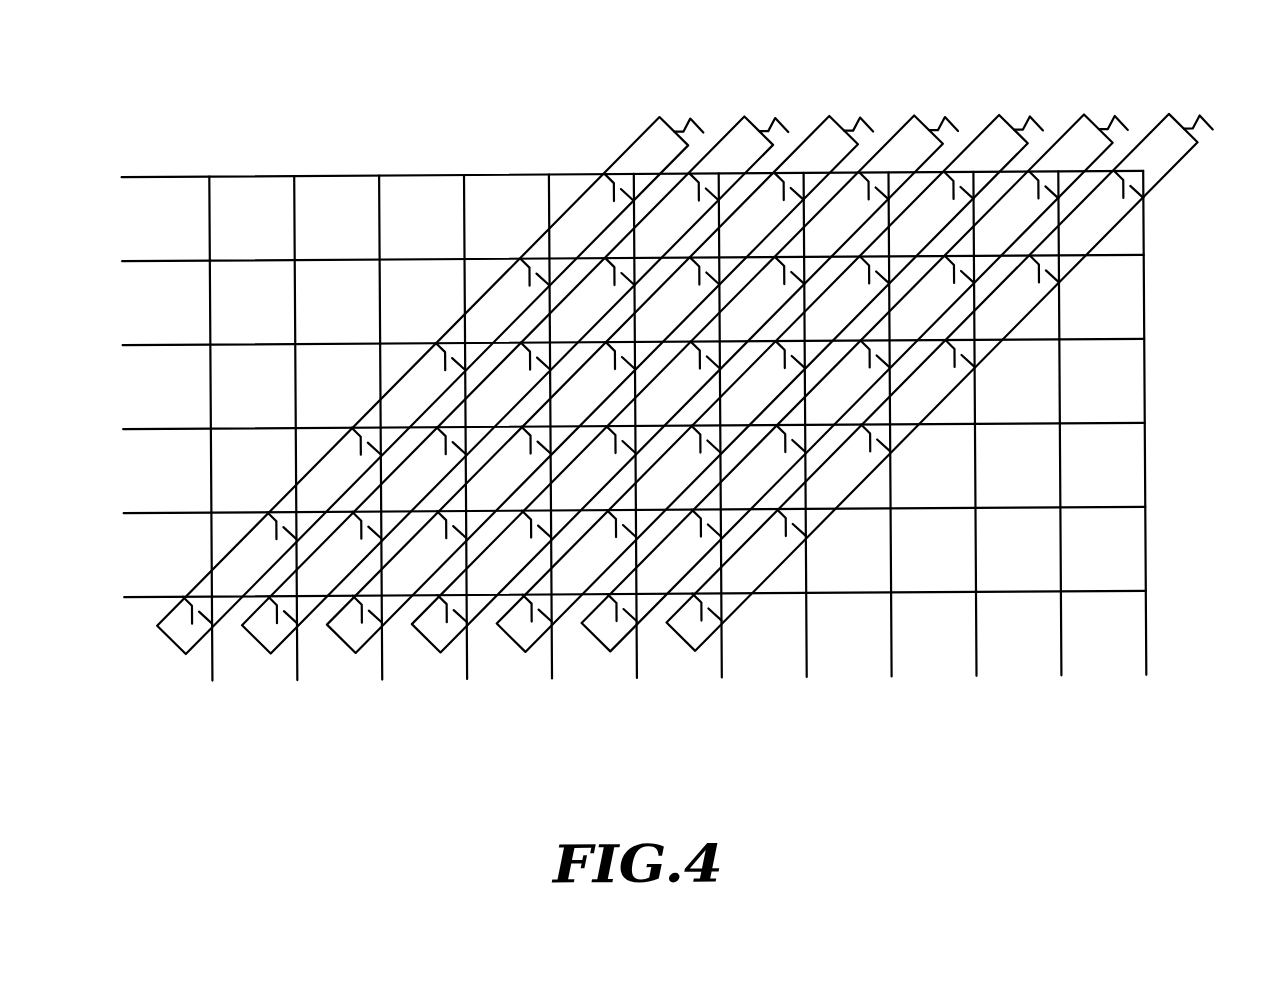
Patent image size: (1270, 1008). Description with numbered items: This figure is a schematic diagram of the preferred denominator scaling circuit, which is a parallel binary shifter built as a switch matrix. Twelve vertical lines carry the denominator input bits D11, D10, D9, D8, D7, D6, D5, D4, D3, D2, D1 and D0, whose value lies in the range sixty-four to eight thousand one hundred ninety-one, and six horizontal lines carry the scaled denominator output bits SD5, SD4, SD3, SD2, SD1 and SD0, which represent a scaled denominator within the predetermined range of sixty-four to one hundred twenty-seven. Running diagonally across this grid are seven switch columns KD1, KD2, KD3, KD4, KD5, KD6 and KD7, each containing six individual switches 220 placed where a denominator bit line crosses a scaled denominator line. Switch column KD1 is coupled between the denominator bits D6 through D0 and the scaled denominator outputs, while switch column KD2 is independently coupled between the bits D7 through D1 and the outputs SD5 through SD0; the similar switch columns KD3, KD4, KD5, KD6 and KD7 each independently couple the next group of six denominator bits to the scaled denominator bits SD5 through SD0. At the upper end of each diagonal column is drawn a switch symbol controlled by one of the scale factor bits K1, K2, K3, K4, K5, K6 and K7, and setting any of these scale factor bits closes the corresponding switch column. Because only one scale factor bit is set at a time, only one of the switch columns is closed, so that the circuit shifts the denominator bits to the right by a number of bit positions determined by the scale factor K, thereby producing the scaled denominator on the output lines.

The switch 220 is at (523, 278).
The scaled denominator output bit SD0 is at (594, 175).
The scaled denominator output bit SD1 is at (594, 259).
The scaled denominator output bit SD2 is at (595, 343).
The scaled denominator output bit SD3 is at (595, 427).
The scaled denominator output bit SD4 is at (596, 511).
The scaled denominator output bit SD5 is at (596, 595).
The denominator input bit D0 is at (1144, 445).
The denominator input bit D1 is at (1059, 445).
The denominator input bit D2 is at (974, 446).
The denominator input bit D3 is at (889, 446).
The denominator input bit D4 is at (805, 447).
The denominator input bit D5 is at (720, 447).
The denominator input bit D6 is at (635, 448).
The denominator input bit D7 is at (550, 448).
The denominator input bit D8 is at (465, 449).
The denominator input bit D9 is at (380, 449).
The denominator input bit D10 is at (295, 450).
The denominator input bit D11 is at (210, 450).
The switch column KD1 is at (661, 117).
The switch column KD2 is at (661, 117).
The switch column KD3 is at (661, 117).
The switch column KD4 is at (661, 117).
The switch column KD5 is at (661, 117).
The switch column KD6 is at (661, 117).
The switch column KD7 is at (661, 117).
The scale factor bit K1 is at (1209, 100).
The scale factor bit K2 is at (1124, 101).
The scale factor bit K3 is at (1040, 101).
The scale factor bit K4 is at (955, 102).
The scale factor bit K5 is at (870, 102).
The scale factor bit K6 is at (785, 103).
The scale factor bit K7 is at (700, 103).